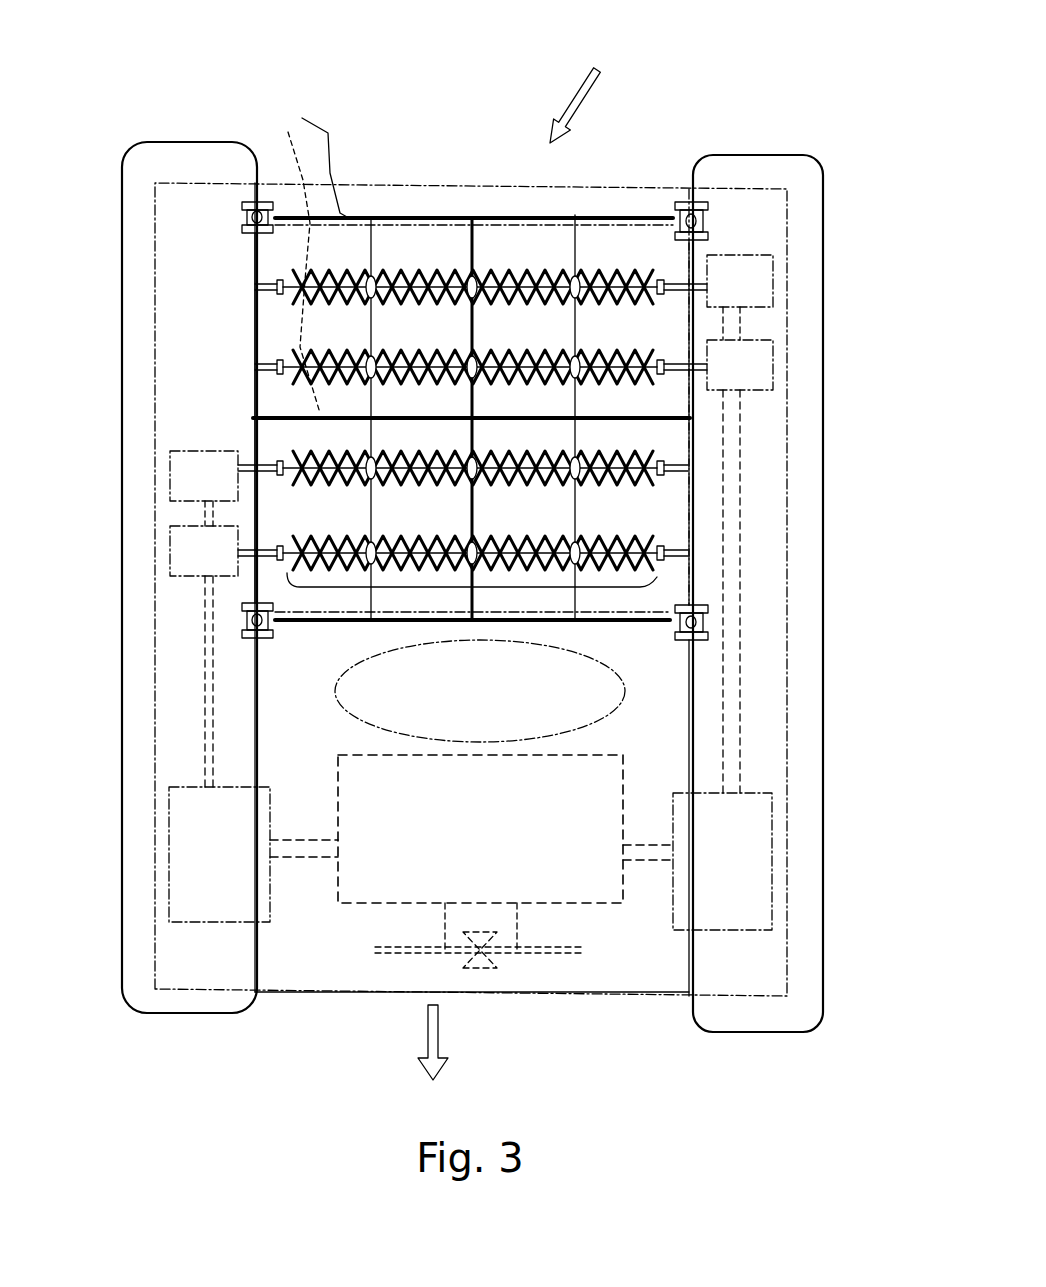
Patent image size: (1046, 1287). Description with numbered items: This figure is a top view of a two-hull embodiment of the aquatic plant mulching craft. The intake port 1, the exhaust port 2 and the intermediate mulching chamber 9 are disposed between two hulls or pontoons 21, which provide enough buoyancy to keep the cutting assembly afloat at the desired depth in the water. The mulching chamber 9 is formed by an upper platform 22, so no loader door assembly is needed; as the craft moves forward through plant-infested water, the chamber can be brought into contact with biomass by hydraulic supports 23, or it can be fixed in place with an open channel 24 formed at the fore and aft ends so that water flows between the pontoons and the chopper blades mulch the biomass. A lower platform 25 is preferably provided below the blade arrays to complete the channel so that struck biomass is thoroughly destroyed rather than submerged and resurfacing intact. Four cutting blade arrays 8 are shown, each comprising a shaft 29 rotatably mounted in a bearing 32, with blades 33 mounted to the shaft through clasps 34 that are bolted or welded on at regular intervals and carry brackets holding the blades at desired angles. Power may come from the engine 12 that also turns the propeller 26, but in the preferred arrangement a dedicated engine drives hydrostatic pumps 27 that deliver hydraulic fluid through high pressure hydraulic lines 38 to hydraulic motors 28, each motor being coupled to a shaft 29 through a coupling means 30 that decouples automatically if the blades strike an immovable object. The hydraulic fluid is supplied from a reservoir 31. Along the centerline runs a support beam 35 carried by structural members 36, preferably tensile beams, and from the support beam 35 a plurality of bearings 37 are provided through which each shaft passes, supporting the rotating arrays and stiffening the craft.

The intake port 1 is at (575, 92).
The exhaust port 2 is at (423, 1041).
The cutting blade array 8 is at (473, 595).
The mulching chamber 9 is at (640, 323).
The engine 12 is at (385, 890).
The side frame rail 21 is at (175, 141).
The upper platform 22 is at (173, 183).
The hydraulic supports 23 is at (253, 202).
The open channel 24 is at (300, 337).
The lower platform 25 is at (427, 237).
The propeller 26 is at (490, 968).
The hydrostatic pumps 27 is at (185, 812).
The hydraulic motors 28 is at (773, 354).
The shaft 29 is at (580, 215).
The coupling means 30 is at (273, 470).
The reservoir 31 is at (558, 708).
The bearing 32 is at (688, 200).
The blades 33 is at (295, 413).
The clasps 34 is at (273, 465).
The support beam 35 is at (473, 442).
The structural members 36 is at (302, 118).
The bearings 37 is at (472, 278).
The high pressure hydraulic lines 38 is at (202, 603).